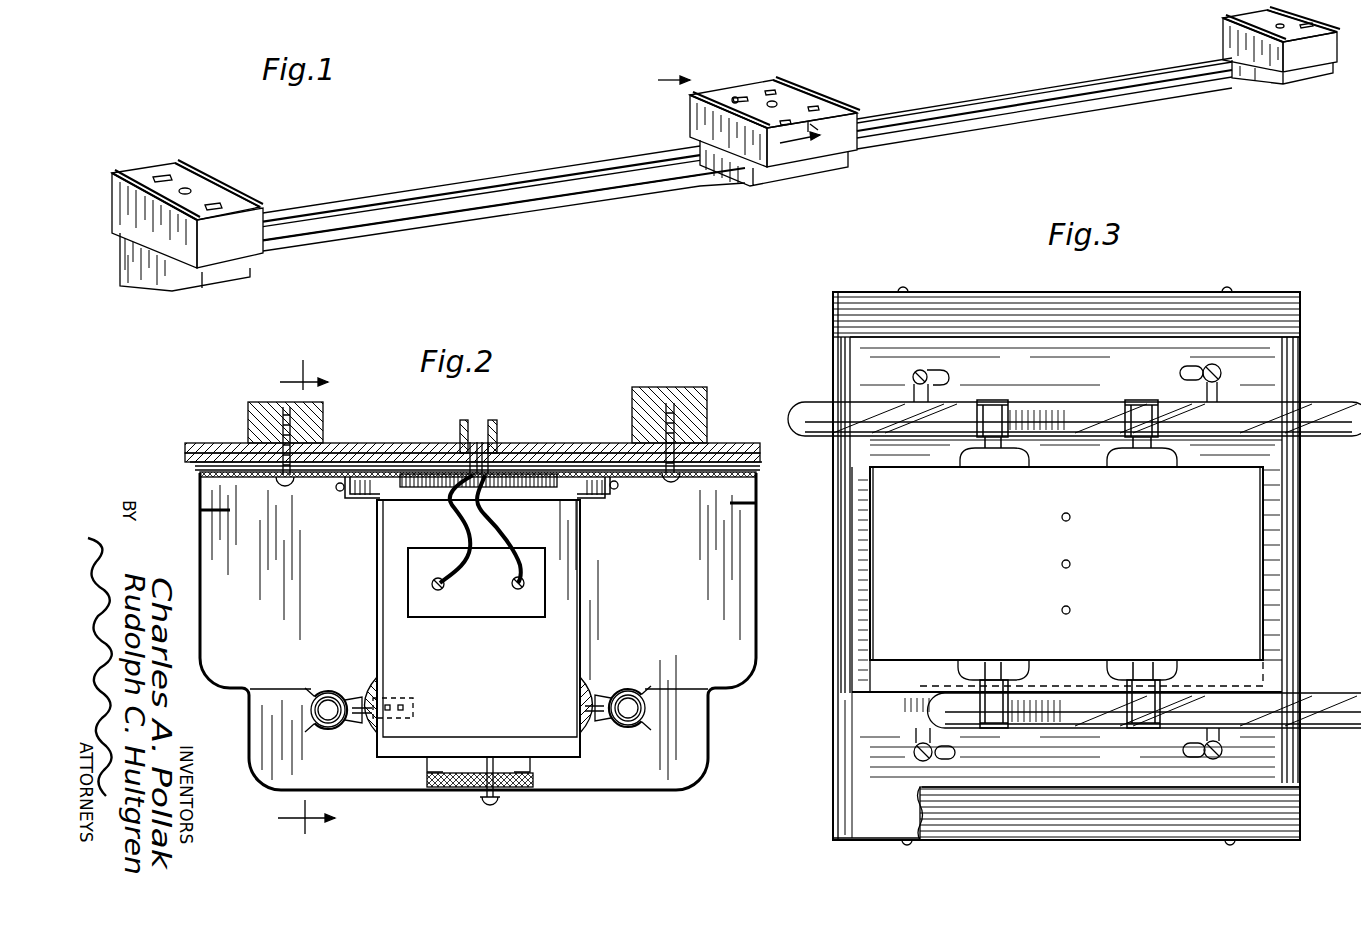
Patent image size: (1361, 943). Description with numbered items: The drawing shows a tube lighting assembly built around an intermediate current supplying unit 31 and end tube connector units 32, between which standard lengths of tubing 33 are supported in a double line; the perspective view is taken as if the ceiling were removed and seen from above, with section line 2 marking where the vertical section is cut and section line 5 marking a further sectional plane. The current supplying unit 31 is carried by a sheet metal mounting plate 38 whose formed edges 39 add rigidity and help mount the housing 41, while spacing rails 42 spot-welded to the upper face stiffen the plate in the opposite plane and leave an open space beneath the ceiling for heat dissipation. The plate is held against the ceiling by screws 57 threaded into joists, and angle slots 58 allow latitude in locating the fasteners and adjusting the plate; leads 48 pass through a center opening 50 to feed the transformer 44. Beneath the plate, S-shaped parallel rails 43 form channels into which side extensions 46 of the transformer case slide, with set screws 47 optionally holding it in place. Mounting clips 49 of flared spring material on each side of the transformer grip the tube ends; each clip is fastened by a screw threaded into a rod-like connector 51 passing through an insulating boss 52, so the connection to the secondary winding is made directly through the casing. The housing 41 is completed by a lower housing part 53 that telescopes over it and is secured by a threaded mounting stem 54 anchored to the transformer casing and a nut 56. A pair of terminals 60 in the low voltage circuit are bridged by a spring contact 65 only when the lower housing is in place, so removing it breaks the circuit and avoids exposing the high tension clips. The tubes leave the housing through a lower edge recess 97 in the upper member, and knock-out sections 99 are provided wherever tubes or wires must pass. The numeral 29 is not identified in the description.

In FIG. 1, the section line 2— 2 is at (729, 111).
In FIG. 2, the section line 5— 5 is at (305, 595).
In FIG. 3, the bottom cover wall 29 is at (862, 822).
In FIG. 1, the intermediate current supplying unit 31 is at (745, 190).
In FIG. 2, the intermediate current supplying unit 31 is at (720, 719).
In FIG. 3, the intermediate current supplying unit 31 is at (1283, 285).
In FIG. 1, the end tube connector unit 32 is at (222, 288).
In FIG. 1, the tubing 33 is at (463, 213).
In FIG. 2, the tubing 33 is at (314, 695).
In FIG. 3, the tubing 33 is at (812, 402).
In FIG. 1, the mounting plate 38 is at (213, 192).
In FIG. 2, the mounting plate 38 is at (538, 487).
In FIG. 3, the mounting plate 38 is at (856, 355).
In FIG. 2, the formed edges 39 is at (222, 512).
In FIG. 1, the housing 41 is at (690, 117).
In FIG. 2, the housing 41 is at (758, 583).
In FIG. 3, the housing 41 is at (998, 292).
In FIG. 1, the spacing rails 42 is at (178, 167).
In FIG. 2, the spacing rails 42 is at (200, 474).
In FIG. 3, the spacing rails 42 is at (1067, 581).
In FIG. 2, the parallel rails 43 is at (352, 498).
In FIG. 3, the parallel rails 43 is at (1272, 447).
In FIG. 2, the transformer 44 is at (572, 599).
In FIG. 3, the transformer 44 is at (1249, 543).
In FIG. 2, the side extensions 46 is at (366, 497).
In FIG. 3, the side extensions 46 is at (882, 672).
In FIG. 2, the set screws 47 is at (340, 490).
In FIG. 2, the leads 48 is at (472, 522).
In FIG. 2, the mounting clips 49 is at (345, 694).
In FIG. 3, the mounting clips 49 is at (990, 450).
In FIG. 1, the center opening 50 is at (186, 188).
In FIG. 2, the rod-like connector 51 is at (408, 697).
In FIG. 3, the rod-like connector 51 is at (1091, 673).
In FIG. 2, the insulating boss 52 is at (373, 683).
In FIG. 3, the insulating boss 52 is at (1155, 467).
In FIG. 1, the lower housing part 53 is at (838, 172).
In FIG. 2, the lower housing part 53 is at (630, 792).
In FIG. 2, the threaded mounting stem 54 is at (493, 790).
In FIG. 3, the threaded mounting stem 54 is at (1071, 565).
In FIG. 2, the nut 56 is at (486, 804).
In FIG. 2, the screws 57 is at (288, 433).
In FIG. 3, the screws 57 is at (948, 377).
In FIG. 1, the angle slots 58 is at (735, 98).
In FIG. 3, the angle slots 58 is at (920, 370).
In FIG. 2, the terminals 60 is at (522, 760).
In FIG. 3, the terminals 60 is at (1062, 606).
In FIG. 2, the spring contact 65 is at (420, 770).
In FIG. 3, the lower edge recess 97 is at (842, 532).
In FIG. 1, the knock-out sections 99 is at (815, 128).